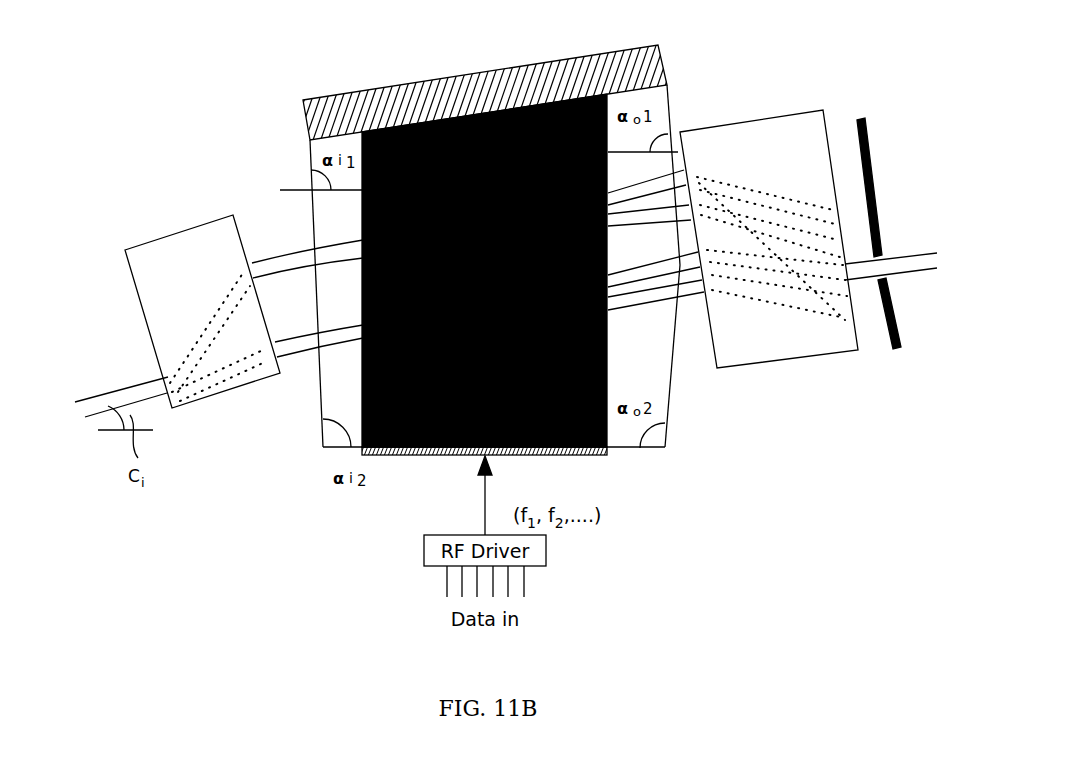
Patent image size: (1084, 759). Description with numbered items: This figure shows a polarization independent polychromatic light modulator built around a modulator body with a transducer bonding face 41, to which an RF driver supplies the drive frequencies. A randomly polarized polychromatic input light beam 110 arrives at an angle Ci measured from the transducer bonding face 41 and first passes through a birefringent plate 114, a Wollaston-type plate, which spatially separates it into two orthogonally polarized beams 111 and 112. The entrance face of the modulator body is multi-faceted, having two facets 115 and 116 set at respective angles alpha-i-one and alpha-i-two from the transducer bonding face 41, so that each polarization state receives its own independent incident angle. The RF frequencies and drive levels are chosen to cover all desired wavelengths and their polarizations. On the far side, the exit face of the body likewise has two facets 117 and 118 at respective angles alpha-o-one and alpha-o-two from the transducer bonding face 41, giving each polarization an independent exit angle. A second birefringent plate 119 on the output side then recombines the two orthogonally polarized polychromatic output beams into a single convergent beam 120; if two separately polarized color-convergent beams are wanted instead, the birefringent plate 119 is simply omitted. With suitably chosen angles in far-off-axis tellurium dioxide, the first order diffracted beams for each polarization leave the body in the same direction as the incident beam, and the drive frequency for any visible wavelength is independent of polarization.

The transducer bonding face 41 is at (634, 454).
The polychromatic input light beam 110 is at (102, 394).
The orthogonally polarized beam 111 is at (286, 339).
The orthogonally polarized beam 112 is at (272, 257).
The birefringent plate 114 is at (216, 398).
The entrance face facet 115 is at (318, 406).
The entrance face facet 116 is at (307, 160).
The exit face facet 117 is at (668, 396).
The exit face facet 118 is at (668, 100).
The birefringent plate 119 is at (800, 358).
The convergent beam 120 is at (910, 257).